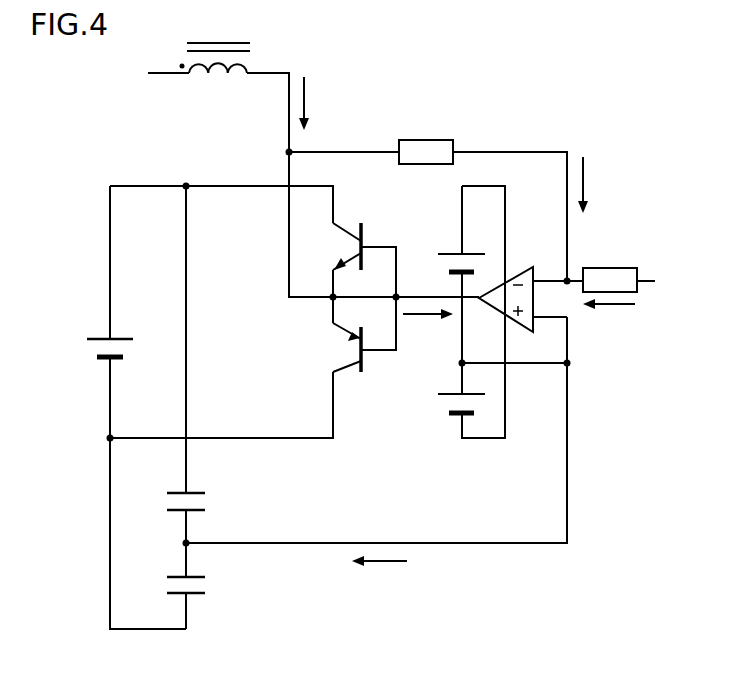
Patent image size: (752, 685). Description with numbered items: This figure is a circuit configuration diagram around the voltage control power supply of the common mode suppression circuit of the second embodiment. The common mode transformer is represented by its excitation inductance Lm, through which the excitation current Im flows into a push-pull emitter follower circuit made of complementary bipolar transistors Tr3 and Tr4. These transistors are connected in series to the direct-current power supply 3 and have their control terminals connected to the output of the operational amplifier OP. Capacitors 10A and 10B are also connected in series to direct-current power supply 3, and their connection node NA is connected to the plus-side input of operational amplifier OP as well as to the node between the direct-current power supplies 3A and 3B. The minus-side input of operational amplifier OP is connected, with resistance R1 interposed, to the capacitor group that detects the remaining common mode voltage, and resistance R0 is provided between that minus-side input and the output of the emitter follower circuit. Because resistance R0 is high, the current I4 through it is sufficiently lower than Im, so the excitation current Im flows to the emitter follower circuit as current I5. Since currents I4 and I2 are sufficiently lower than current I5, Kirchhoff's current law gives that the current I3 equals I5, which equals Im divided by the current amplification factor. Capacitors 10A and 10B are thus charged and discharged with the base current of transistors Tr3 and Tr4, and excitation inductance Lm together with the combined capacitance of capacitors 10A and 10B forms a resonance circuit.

The excitation inductance Lm is at (215, 73).
The excitation current Im is at (319, 103).
The resistance R0 is at (441, 140).
The current I4 is at (596, 185).
The bipolar transistor Tr3 is at (362, 233).
The bipolar transistor Tr4 is at (362, 362).
The direct-current power supply 3A is at (455, 252).
The direct-current power supply 3B is at (455, 393).
The current I5 is at (428, 328).
The operational amplifier OP is at (517, 273).
The resistance R1 is at (620, 268).
The current I2 is at (609, 315).
The connection node NA is at (567, 452).
The direct-current power supply 3 is at (100, 335).
The capacitor 10A is at (168, 502).
The capacitor 10B is at (168, 585).
The current I3 is at (379, 572).